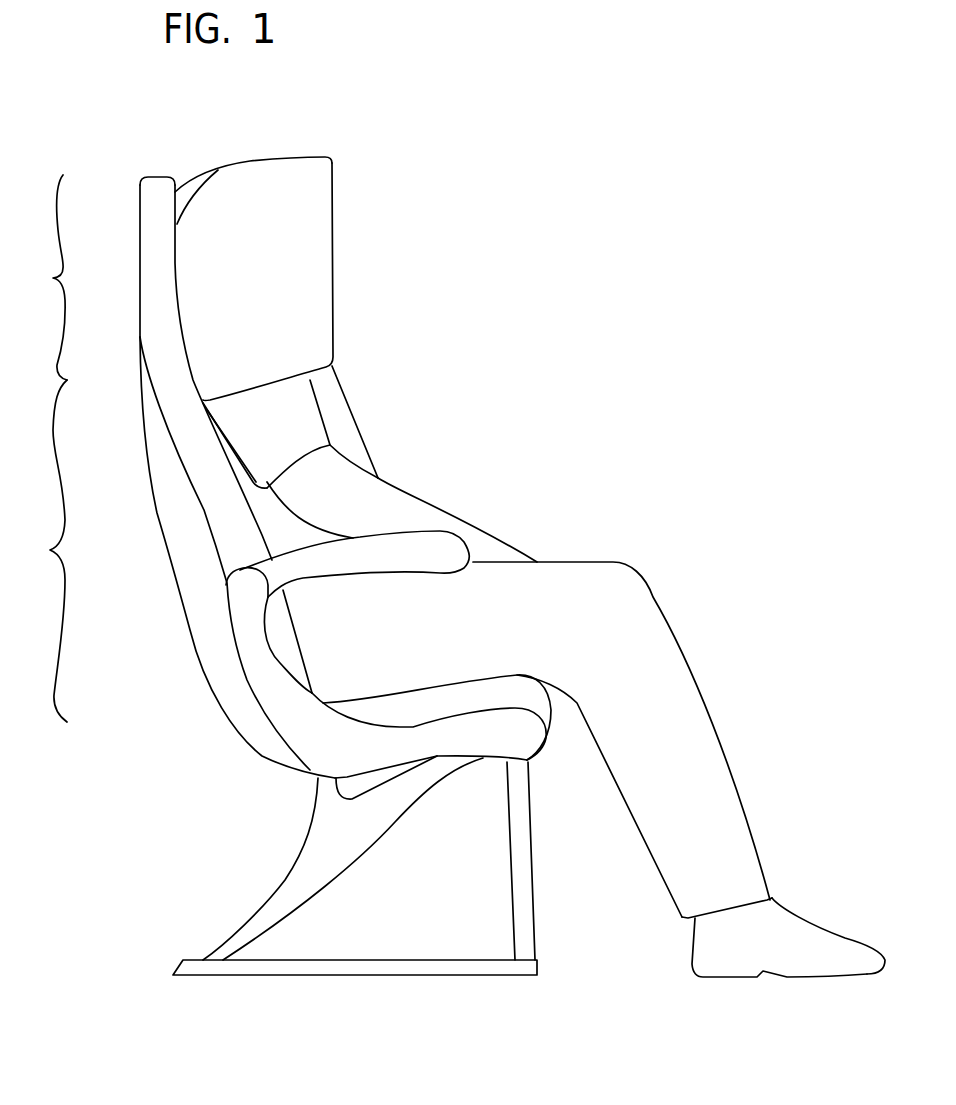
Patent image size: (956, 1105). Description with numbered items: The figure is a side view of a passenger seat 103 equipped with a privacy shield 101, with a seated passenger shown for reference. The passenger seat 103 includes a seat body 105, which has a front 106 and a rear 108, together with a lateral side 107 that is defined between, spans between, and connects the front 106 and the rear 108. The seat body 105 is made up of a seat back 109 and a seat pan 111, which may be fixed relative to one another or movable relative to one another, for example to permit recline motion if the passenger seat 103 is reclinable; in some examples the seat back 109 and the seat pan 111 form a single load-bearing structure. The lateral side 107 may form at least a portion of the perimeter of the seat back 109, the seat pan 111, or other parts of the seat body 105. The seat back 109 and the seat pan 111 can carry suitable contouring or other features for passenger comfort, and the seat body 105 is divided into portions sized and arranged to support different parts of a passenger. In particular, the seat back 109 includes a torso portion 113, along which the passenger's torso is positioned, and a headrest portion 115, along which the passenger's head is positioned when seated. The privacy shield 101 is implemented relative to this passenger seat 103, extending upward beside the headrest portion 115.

The privacy shield 101 is at (320, 205).
The passenger seat 103 is at (190, 130).
The seat body 105 is at (196, 778).
The front 106 is at (176, 192).
The lateral side 107 is at (157, 190).
The rear 108 is at (142, 197).
The seat back 109 is at (186, 603).
The seat pan 111 is at (417, 713).
The torso portion 113 is at (40, 551).
The headrest portion 115 is at (42, 277).